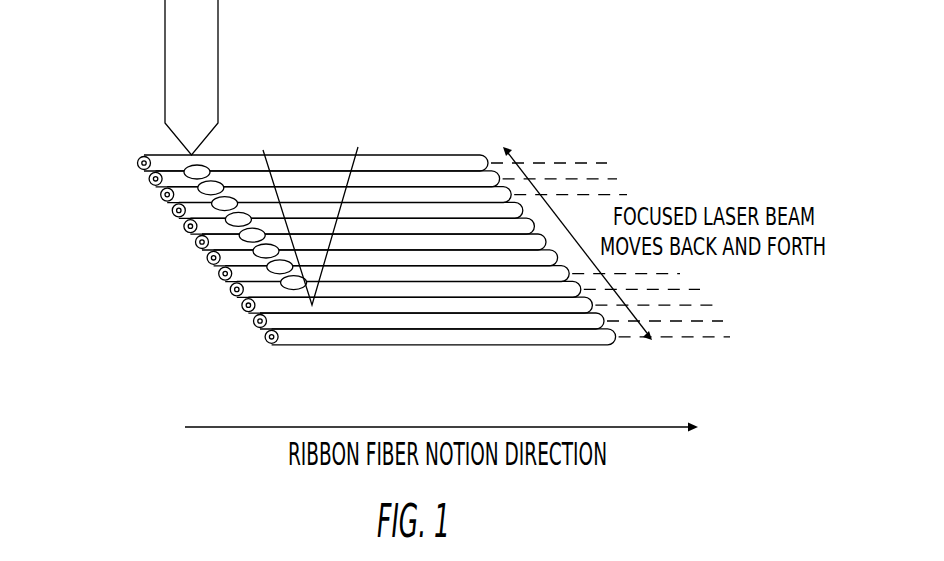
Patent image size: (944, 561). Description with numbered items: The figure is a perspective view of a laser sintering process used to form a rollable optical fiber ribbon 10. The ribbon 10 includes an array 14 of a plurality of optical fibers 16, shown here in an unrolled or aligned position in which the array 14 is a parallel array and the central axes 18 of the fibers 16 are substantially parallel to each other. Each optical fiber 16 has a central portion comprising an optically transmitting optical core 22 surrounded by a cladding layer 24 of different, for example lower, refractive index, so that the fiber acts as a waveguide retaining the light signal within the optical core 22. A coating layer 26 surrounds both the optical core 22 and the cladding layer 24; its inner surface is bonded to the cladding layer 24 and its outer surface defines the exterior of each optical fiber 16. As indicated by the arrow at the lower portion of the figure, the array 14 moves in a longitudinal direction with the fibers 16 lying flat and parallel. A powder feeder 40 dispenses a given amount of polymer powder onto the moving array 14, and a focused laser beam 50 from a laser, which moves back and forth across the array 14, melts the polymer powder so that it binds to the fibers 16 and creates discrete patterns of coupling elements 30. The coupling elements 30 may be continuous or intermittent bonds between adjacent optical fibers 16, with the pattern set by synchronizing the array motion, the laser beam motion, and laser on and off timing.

The optical fiber ribbon 10 is at (340, 222).
The array 14 is at (340, 222).
The optical fibers 16 is at (224, 248).
The central axes 18 is at (675, 288).
The optical core 22 is at (276, 107).
The cladding layer 24 is at (140, 157).
The coating layer 26 is at (147, 155).
The coupling elements 30 is at (266, 252).
The powder feeder 40 is at (238, 59).
The focused laser beam 50 is at (364, 146).